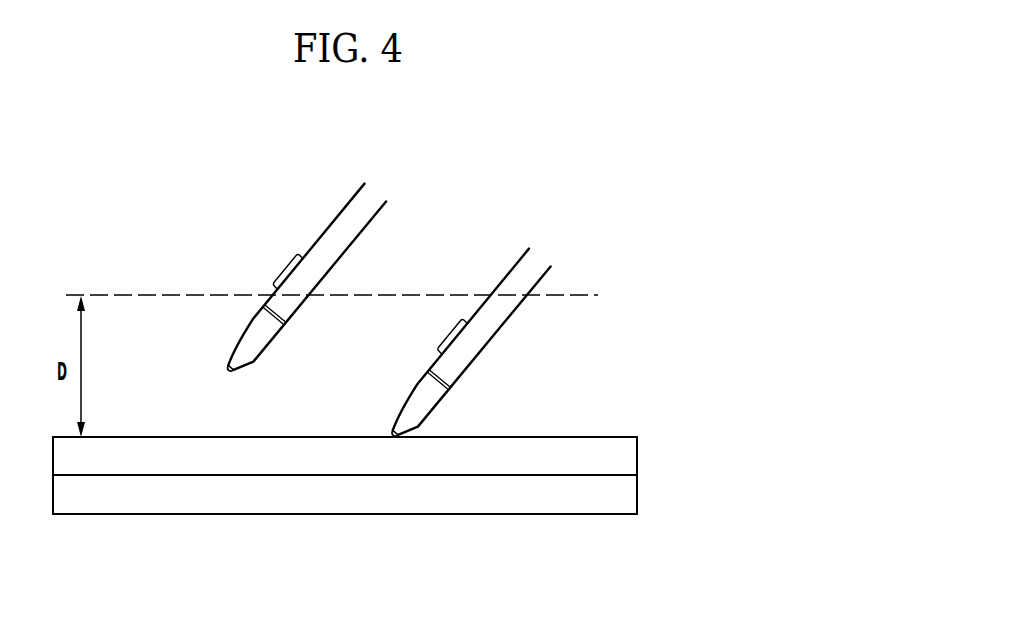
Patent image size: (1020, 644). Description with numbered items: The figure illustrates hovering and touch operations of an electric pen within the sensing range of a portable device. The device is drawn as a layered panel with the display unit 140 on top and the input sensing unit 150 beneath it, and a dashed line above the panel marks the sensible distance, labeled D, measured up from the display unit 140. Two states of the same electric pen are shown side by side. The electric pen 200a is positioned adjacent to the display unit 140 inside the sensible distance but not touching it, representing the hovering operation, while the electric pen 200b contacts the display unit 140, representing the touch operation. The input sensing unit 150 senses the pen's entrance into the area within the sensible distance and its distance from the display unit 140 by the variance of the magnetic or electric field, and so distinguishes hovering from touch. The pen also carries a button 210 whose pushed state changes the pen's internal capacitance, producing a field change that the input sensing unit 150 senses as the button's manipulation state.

The electric pen 200a is at (376, 197).
The electric pen 200b is at (538, 263).
The button 210 is at (281, 264).
The display unit 140 is at (630, 453).
The input sensing unit 150 is at (630, 493).